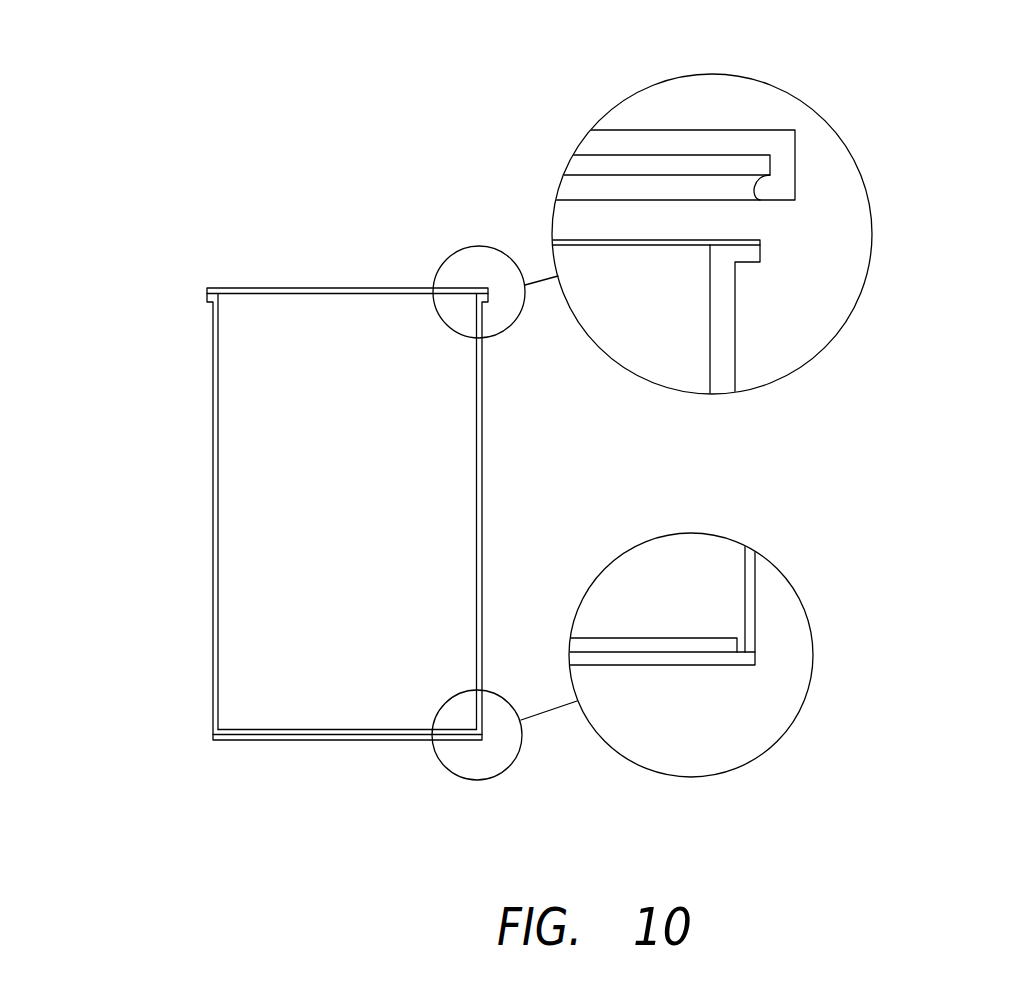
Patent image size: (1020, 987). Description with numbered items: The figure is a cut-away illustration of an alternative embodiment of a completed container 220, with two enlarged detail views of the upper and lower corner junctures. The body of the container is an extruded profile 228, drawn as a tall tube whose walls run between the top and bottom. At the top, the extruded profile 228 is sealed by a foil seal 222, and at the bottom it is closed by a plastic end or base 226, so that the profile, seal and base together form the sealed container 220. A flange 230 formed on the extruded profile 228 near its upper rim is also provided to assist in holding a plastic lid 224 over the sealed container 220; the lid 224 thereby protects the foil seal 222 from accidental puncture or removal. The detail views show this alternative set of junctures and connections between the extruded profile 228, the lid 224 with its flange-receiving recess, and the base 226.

The completed container 220 is at (493, 421).
The foil seal 222 is at (370, 287).
The plastic lid 224 is at (707, 130).
The plastic end or base 226 is at (252, 740).
The extruded profile 228 is at (212, 460).
The flange 230 is at (743, 265).